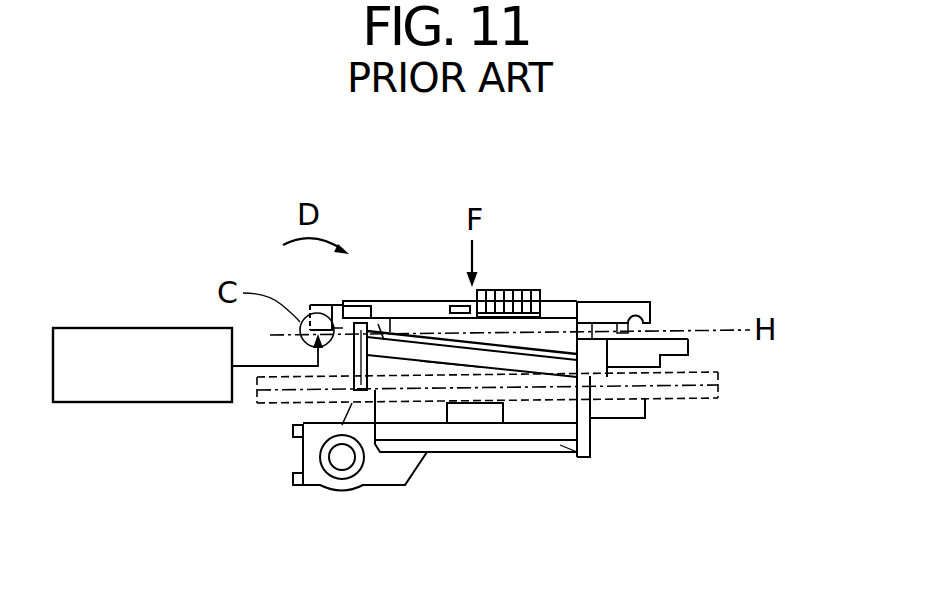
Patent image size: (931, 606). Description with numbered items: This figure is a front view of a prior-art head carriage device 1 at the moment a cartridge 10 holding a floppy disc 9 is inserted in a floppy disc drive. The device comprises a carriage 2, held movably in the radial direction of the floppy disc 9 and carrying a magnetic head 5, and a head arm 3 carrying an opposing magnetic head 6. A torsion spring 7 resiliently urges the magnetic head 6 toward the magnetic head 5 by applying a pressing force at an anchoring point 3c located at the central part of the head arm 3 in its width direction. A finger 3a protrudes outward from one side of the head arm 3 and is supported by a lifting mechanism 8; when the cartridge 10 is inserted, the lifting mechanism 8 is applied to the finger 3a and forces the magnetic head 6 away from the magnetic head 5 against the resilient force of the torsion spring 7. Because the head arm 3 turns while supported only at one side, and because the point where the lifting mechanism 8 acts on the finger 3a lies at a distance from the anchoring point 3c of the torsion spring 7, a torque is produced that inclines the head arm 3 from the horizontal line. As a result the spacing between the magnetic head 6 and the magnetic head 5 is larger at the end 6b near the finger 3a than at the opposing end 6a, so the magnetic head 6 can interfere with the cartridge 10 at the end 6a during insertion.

The head carriage device 1 is at (579, 262).
The carriage 2 is at (508, 440).
The head arm 3 is at (388, 303).
The finger 3a is at (323, 301).
The anchoring point 3c is at (460, 298).
The magnetic head 5 is at (473, 413).
The magnetic head 6 is at (456, 350).
The end of the magnetic head 6a is at (555, 443).
The end of the magnetic head 6b is at (440, 347).
The torsion spring 7 is at (493, 291).
The lifting mechanism 8 is at (132, 328).
The floppy disc 9 is at (673, 385).
The cartridge 10 is at (700, 398).